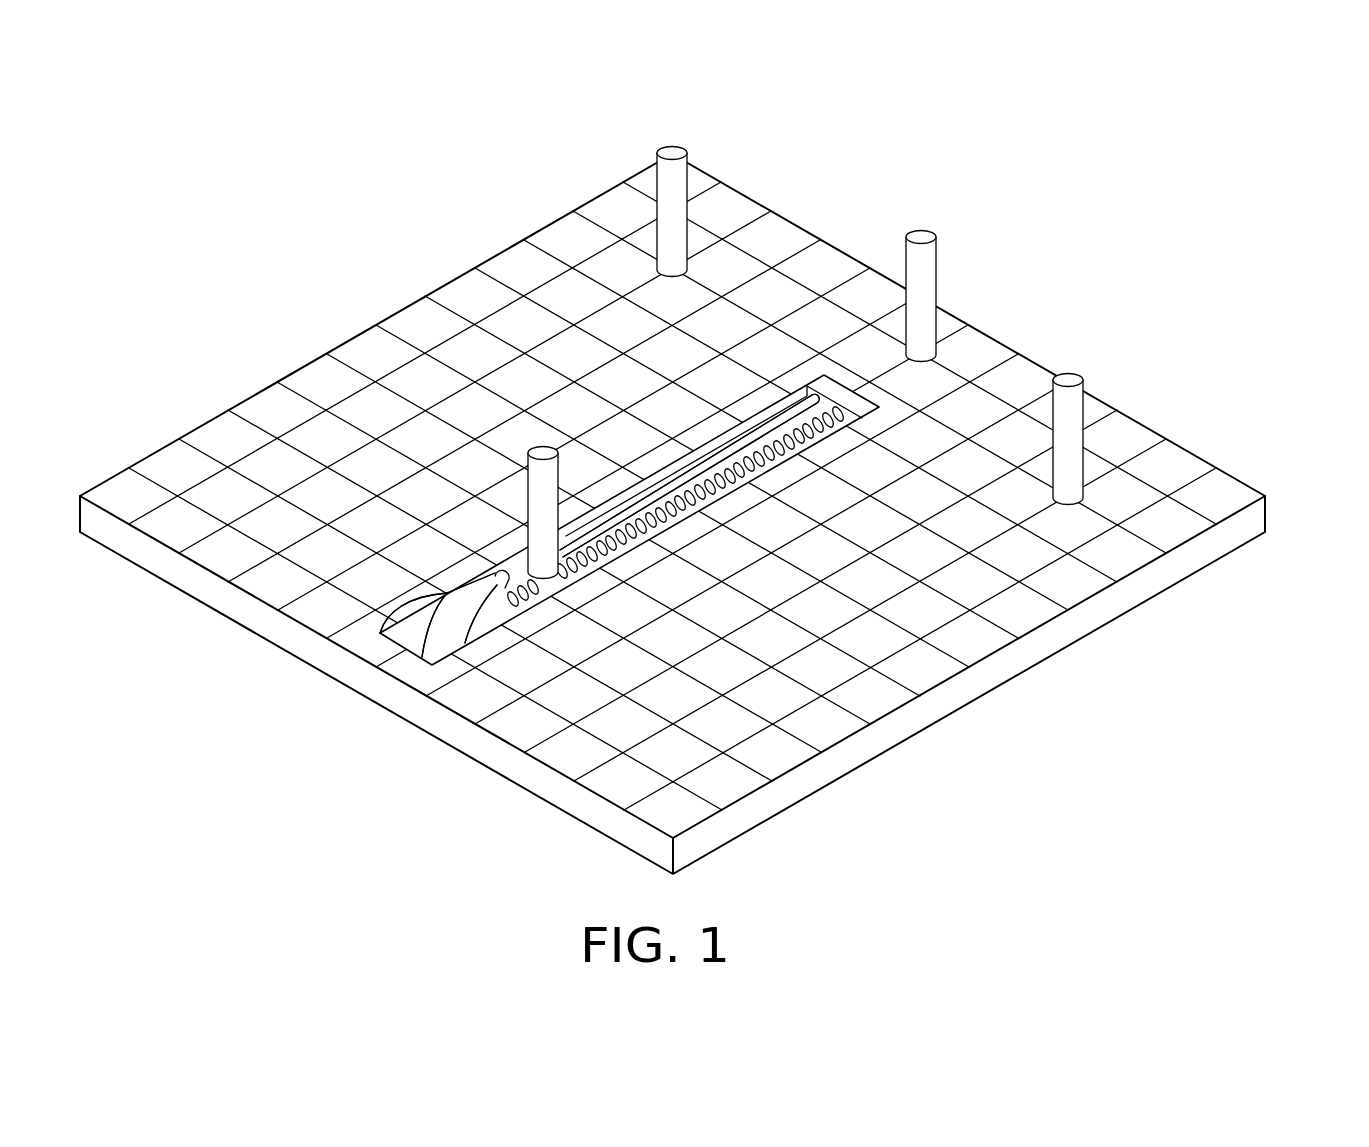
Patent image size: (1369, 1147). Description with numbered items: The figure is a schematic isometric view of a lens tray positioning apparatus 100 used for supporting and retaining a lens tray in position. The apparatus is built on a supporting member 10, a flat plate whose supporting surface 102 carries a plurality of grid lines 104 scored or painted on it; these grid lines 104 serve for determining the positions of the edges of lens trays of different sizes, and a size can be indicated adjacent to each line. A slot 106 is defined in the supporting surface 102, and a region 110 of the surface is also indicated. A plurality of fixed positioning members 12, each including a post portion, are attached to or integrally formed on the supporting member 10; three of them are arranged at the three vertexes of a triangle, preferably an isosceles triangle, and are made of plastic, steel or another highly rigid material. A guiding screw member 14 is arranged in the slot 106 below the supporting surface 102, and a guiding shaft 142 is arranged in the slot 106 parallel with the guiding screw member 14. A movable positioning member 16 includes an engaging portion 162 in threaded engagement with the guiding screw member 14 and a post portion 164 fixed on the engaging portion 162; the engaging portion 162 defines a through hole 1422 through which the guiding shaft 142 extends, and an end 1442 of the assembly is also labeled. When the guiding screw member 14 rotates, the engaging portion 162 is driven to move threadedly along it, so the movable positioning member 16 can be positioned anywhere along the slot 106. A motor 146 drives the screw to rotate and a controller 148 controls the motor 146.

The lens tray positioning apparatus 100 is at (612, 98).
The supporting member 10 is at (1085, 641).
The supporting surface 102 is at (1225, 490).
The grid lines 104 is at (1190, 480).
The slot 106 is at (780, 408).
The positioning region 110 is at (955, 427).
The fixed positioning member 12 is at (1067, 380).
The guiding screw member 14 is at (682, 488).
The guiding shaft 142 is at (623, 517).
The through hole 1422 is at (505, 577).
The spring end 1442 is at (523, 580).
The motor 146 is at (487, 605).
The controller 148 is at (423, 620).
The movable positioning member 16 is at (220, 313).
The engaging portion 162 is at (495, 577).
The post portion 164 is at (520, 550).